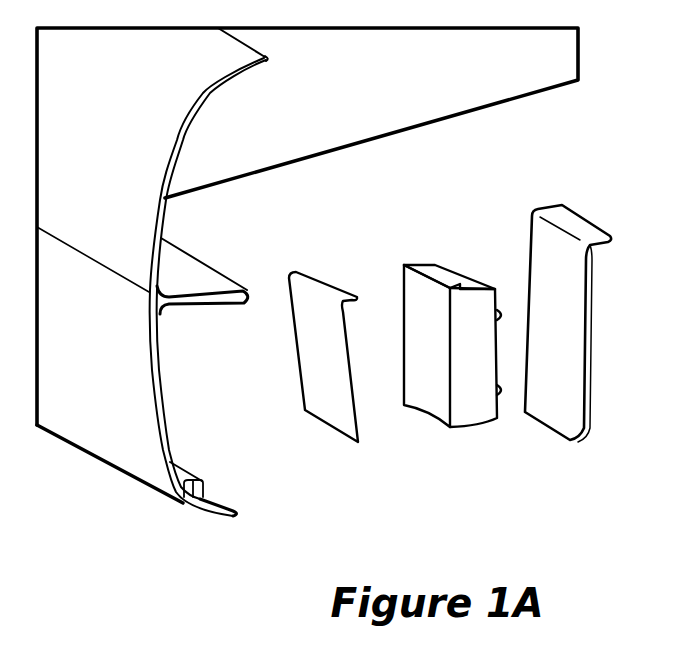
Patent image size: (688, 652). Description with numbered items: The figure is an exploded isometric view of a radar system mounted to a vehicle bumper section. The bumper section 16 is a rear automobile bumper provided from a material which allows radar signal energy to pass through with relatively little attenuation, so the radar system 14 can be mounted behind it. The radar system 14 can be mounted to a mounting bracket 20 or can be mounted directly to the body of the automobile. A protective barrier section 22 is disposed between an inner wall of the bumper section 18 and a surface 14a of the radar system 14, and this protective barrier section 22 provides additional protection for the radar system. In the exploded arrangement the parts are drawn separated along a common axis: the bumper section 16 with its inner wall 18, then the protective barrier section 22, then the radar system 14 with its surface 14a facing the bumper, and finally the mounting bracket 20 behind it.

The radar system 14 is at (433, 425).
The surface of the radar system 14a is at (403, 298).
The bumper section 16 is at (198, 258).
The inner wall of the bumper section 18 is at (212, 518).
The mounting bracket 20 is at (550, 430).
The protective barrier section 22 is at (332, 427).